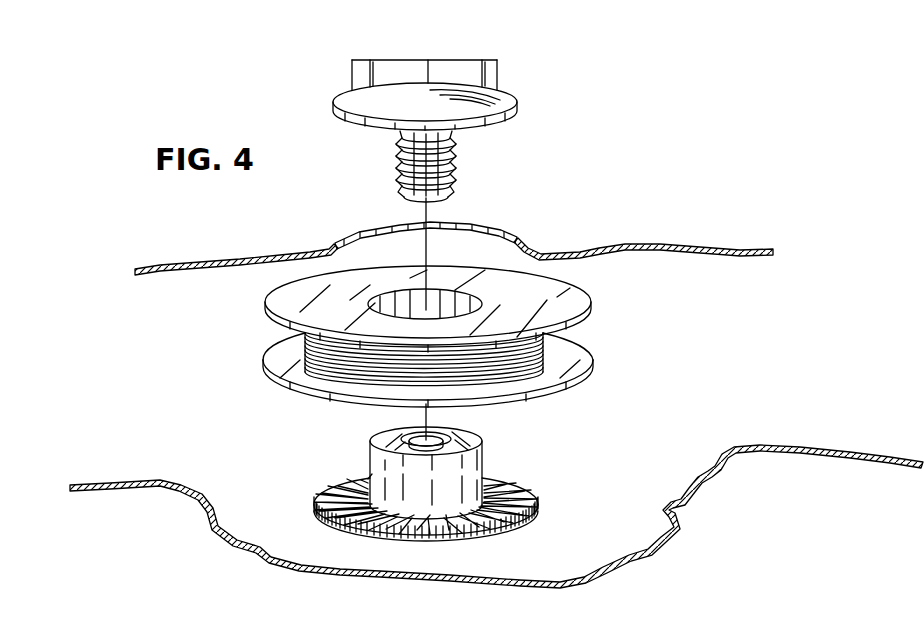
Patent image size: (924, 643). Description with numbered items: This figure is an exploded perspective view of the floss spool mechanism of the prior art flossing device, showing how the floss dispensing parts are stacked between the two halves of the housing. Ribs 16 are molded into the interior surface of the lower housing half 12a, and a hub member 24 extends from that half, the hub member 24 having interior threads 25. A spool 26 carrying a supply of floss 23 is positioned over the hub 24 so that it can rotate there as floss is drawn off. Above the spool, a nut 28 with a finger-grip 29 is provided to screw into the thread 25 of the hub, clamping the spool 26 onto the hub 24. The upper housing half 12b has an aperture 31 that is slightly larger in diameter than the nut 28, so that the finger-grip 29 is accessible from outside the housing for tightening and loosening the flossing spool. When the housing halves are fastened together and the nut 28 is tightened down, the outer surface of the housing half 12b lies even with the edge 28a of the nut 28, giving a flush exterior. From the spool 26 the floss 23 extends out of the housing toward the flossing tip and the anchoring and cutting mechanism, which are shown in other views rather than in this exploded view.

The finger-grip 29 is at (450, 60).
The nut 28 is at (503, 94).
The edge of nut 28a is at (495, 128).
The aperture 31 is at (338, 242).
The housing half 12b is at (233, 228).
The spool 26 is at (572, 297).
The floss 23 is at (573, 354).
The interior threads 25 is at (440, 430).
The hub member 24 is at (470, 475).
The ribs 16 is at (483, 525).
The housing half 12a is at (612, 540).